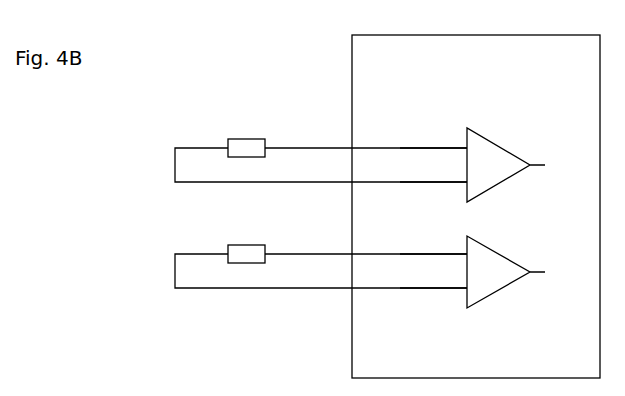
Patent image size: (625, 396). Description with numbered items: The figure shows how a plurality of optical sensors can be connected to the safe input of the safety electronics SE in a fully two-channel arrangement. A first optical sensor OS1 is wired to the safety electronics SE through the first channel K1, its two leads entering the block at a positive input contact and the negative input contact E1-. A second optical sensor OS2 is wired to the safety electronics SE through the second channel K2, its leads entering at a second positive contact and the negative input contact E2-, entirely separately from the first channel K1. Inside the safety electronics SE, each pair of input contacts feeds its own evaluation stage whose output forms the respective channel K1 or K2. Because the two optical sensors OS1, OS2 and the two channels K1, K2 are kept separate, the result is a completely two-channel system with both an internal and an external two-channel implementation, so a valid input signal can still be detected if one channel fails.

The safety electronics SE is at (476, 206).
The first optical sensor OS1 is at (243, 112).
The second optical sensor OS2 is at (243, 218).
The input contact E1- is at (433, 175).
The input contact E2- is at (433, 280).
The first channel K1 is at (525, 165).
The second channel K2 is at (525, 272).